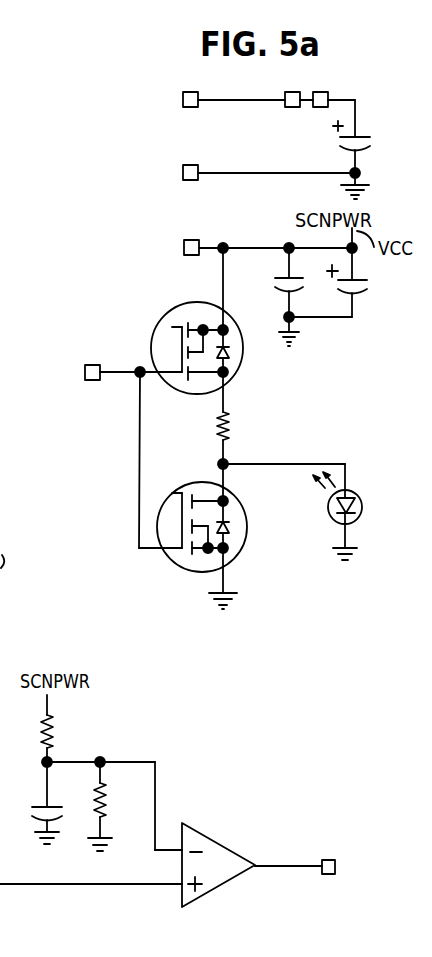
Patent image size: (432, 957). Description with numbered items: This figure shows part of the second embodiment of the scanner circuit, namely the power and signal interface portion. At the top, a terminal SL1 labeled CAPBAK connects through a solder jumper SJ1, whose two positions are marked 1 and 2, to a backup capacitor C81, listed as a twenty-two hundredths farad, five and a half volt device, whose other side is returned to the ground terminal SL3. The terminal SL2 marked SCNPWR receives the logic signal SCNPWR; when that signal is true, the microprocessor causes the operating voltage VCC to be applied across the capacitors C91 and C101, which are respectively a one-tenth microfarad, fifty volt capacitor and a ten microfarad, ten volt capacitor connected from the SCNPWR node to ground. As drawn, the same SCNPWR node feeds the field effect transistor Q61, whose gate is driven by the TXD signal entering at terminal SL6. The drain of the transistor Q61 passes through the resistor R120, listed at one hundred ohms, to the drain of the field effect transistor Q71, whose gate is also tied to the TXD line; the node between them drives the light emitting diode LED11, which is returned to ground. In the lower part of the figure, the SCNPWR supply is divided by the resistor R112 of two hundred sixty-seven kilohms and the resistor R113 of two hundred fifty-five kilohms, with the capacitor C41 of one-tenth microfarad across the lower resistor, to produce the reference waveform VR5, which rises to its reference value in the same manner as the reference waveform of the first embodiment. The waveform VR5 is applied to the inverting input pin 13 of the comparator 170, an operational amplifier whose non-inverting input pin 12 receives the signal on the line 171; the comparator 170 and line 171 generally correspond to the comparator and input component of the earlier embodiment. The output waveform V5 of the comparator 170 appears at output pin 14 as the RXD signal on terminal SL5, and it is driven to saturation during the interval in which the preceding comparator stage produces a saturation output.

The solder pad / connector terminal SL1 is at (210, 93).
The solder jumper SJ1 is at (311, 104).
The pin 1 of solder jumper SJ1 1 is at (290, 111).
The pin 2 of solder jumper SJ1 2 is at (341, 88).
The capacitor C81 is at (370, 136).
The ground terminal SL3 is at (252, 174).
The scanner power terminal SL2 is at (243, 238).
The capacitor C91 is at (272, 294).
The capacitor C101 is at (349, 280).
The field effect transistor Q61 is at (188, 302).
The transmit data terminal SL6 is at (112, 449).
The resistor R120 is at (252, 438).
The field effect transistor Q71 is at (208, 480).
The light emitting diode LED11 is at (356, 495).
The resistor R112 is at (26, 728).
The reference waveform VR5 is at (85, 755).
The capacitor C41 is at (34, 803).
The resistor R113 is at (115, 806).
The comparator 170 is at (215, 853).
The inverting input pin 13 of comparator 13 is at (168, 840).
The non-inverting input pin 12 of comparator 12 is at (171, 875).
The output pin 14 of comparator 14 is at (265, 879).
The output waveform V5 is at (262, 858).
The receive data terminal SL5 is at (330, 866).
The component 171 is at (18, 884).